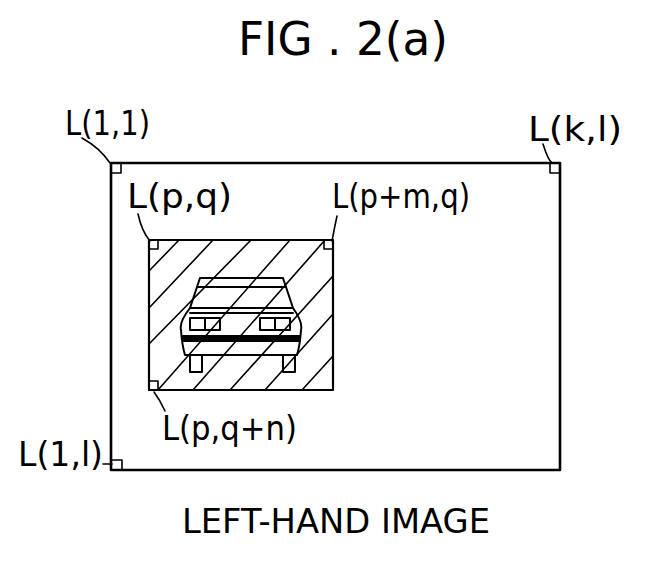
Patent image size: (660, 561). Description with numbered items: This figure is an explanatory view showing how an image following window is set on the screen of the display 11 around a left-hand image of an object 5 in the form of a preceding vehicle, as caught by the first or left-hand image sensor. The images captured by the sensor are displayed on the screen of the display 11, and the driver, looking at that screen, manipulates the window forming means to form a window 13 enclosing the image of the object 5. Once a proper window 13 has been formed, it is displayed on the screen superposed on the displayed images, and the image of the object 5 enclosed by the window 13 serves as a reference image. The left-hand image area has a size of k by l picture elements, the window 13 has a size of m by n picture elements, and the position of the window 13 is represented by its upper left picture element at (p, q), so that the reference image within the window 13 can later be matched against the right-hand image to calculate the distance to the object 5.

The object 5 is at (266, 276).
The display 11 is at (476, 163).
The window 13 is at (152, 322).